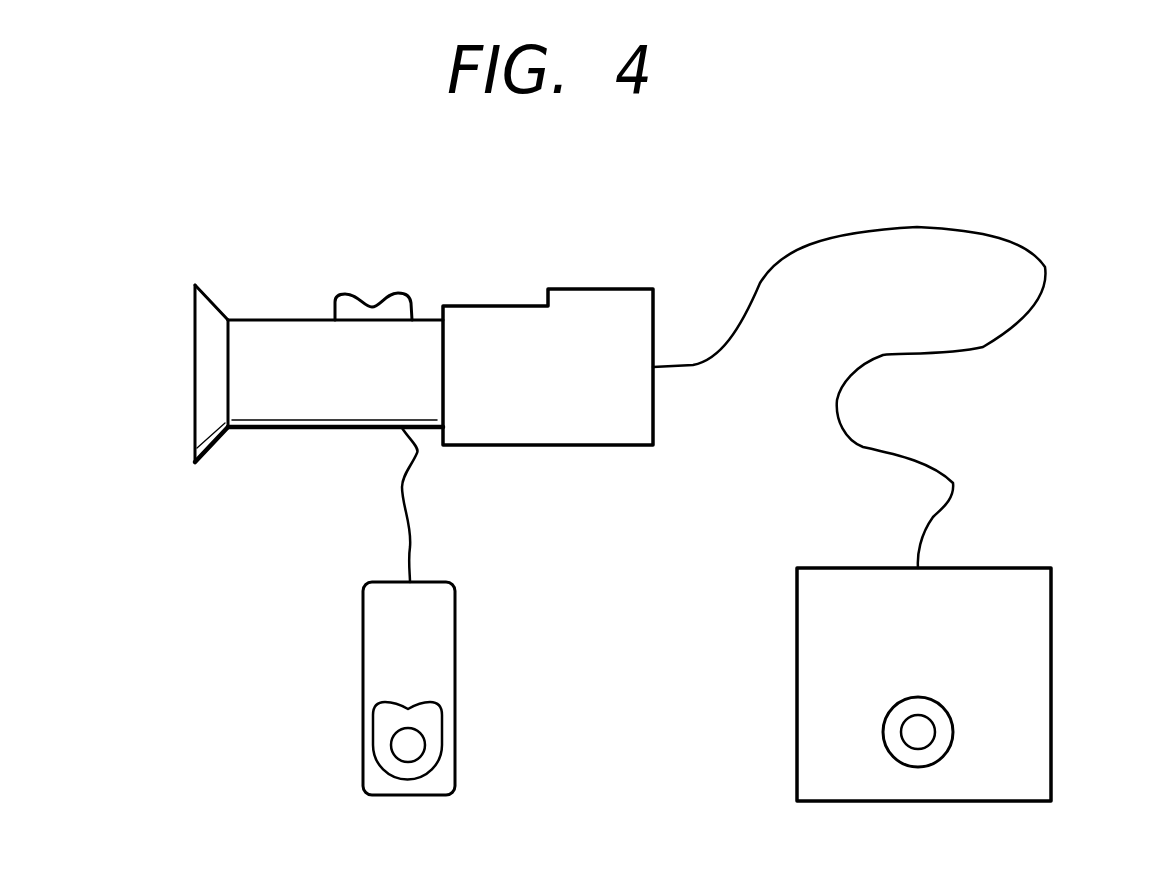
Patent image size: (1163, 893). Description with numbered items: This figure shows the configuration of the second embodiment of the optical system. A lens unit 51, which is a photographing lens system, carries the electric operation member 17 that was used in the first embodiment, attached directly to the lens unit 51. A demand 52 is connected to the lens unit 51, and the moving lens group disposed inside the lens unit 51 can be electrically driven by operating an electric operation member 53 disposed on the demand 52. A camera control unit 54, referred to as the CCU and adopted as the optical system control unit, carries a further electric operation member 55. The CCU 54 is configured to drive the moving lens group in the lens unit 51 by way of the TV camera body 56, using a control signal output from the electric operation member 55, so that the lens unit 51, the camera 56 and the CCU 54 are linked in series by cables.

The lens unit 51 is at (282, 330).
The electric operation member 17 is at (400, 290).
The TV camera body 56 is at (597, 297).
The demand 52 is at (455, 637).
The electric operation member 53 is at (435, 752).
The camera control unit 54 is at (1040, 593).
The electric operation member 55 is at (943, 743).